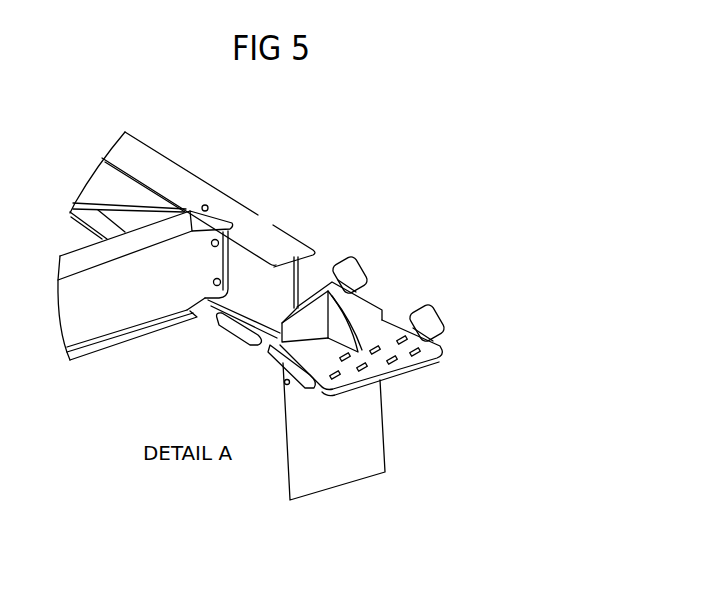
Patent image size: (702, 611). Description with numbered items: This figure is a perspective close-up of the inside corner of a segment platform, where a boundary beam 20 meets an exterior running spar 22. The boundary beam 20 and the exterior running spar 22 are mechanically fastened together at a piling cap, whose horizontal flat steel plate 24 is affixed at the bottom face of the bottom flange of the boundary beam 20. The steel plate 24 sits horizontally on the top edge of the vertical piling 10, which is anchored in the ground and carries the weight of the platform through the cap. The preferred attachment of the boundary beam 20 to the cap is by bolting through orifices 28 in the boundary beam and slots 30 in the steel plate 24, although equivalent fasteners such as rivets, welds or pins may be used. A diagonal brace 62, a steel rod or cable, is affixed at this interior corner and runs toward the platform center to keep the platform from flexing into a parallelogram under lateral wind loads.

The piling 10 is at (378, 420).
The boundary beam 20 is at (303, 238).
The exterior running spar 22 is at (122, 347).
The steel plate 24 is at (440, 353).
The orifice 28 is at (365, 305).
The slot 30 is at (340, 375).
The diagonal brace 62 is at (440, 311).